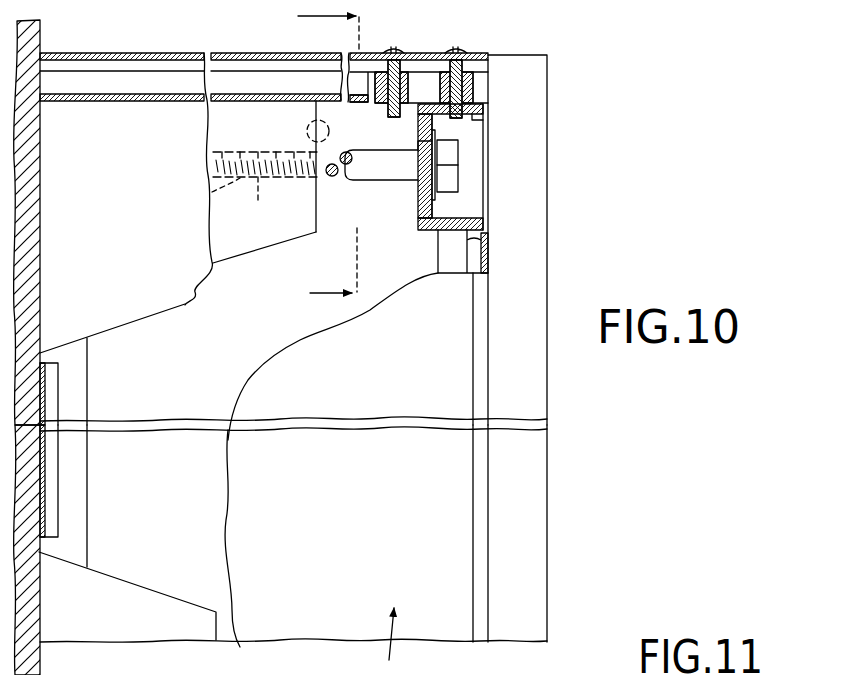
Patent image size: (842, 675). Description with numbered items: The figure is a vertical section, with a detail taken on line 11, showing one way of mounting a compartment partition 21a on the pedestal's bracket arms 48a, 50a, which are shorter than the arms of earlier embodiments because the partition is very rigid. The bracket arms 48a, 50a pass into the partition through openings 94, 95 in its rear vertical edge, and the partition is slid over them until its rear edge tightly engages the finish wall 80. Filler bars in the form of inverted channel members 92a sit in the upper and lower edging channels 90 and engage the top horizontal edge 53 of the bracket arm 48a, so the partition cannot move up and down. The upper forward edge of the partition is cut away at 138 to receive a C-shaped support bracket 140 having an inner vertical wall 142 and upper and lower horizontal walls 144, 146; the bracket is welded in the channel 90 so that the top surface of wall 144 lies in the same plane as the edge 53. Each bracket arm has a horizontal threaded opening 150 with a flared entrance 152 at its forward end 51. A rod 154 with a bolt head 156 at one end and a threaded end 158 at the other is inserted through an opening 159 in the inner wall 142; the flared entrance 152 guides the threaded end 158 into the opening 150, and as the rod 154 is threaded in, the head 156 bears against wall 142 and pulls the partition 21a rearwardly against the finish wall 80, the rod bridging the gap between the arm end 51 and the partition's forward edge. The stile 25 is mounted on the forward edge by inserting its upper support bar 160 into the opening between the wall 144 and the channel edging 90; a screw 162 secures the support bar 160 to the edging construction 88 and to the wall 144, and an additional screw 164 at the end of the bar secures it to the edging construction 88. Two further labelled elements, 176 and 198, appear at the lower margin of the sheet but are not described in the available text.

In FIG. 10, the finish wall 80 is at (40, 255).
In FIG. 10, the inverted channel member 92a is at (90, 71).
In FIG. 10, the top horizontal edge 53 is at (147, 101).
In FIG. 10, the edging construction 88 is at (250, 68).
In FIG. 10, the section line 11 is at (314, 157).
In FIG. 10, the additional screw 164 is at (389, 52).
In FIG. 10, the upper support bar 160 is at (422, 82).
In FIG. 10, the screw 162 is at (458, 54).
In FIG. 10, the C-shaped support bracket 140 is at (412, 191).
In FIG. 10, the inner vertical wall 142 is at (425, 207).
In FIG. 10, the lower horizontal wall 146 is at (470, 220).
In FIG. 10, the upper horizontal wall 144 is at (475, 118).
In FIG. 10, the bolt head 156 is at (450, 173).
In FIG. 10, the rod 154 is at (372, 165).
In FIG. 10, the opening 159 is at (417, 151).
In FIG. 10, the horizontal threaded opening 150 is at (265, 166).
In FIG. 10, the forward end 51 is at (328, 217).
In FIG. 10, the flared entrance 152 is at (312, 122).
In FIG. 10, the threaded end 158 is at (212, 196).
In FIG. 10, the edging channel 90 is at (450, 265).
In FIG. 10, the cut away portion 138 is at (478, 238).
In FIG. 10, the bracket arm 48a is at (153, 280).
In FIG. 10, the opening 94 is at (48, 358).
In FIG. 11, the stile 25 is at (523, 542).
In FIG. 11, the opening 95 is at (45, 545).
In FIG. 11, the bracket arm 50a is at (151, 606).
In FIG. 11, the partition 21a is at (398, 641).
In FIG. 11, the member 176 is at (167, 665).
In FIG. 11, the member 198 is at (233, 665).